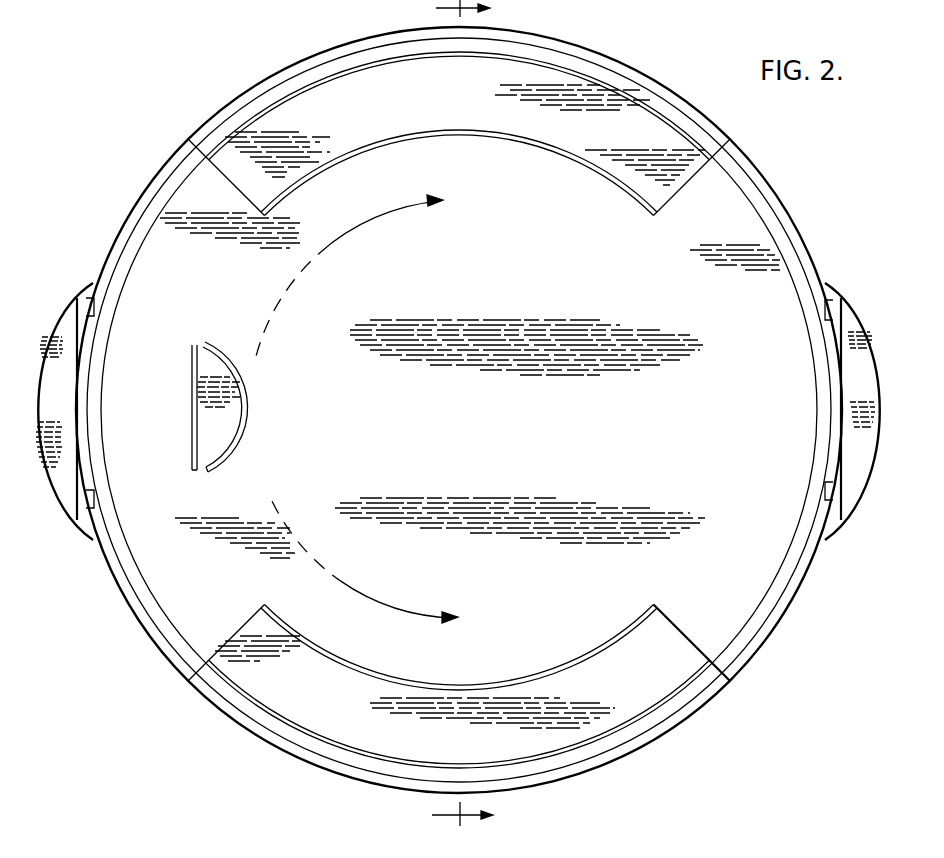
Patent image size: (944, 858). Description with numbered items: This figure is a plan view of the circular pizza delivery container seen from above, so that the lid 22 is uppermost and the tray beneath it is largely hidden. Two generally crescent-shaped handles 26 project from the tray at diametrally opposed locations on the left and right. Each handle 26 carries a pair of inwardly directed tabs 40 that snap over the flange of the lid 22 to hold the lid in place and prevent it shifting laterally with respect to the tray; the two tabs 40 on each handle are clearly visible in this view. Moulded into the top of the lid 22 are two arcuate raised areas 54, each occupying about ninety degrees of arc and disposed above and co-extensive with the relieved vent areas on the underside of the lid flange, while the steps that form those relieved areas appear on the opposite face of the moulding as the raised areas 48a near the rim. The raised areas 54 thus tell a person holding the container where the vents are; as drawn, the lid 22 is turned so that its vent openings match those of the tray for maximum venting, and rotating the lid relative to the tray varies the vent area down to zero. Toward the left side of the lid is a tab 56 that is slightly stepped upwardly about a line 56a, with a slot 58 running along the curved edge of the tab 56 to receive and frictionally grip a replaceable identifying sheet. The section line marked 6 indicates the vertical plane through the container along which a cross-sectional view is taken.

The upper container section 22 is at (733, 234).
The handles 26 is at (48, 476).
The inwardly directed tabs 40 is at (92, 318).
The raised areas 48a is at (619, 67).
The arcuate raised areas 54 is at (540, 126).
The tab 56 is at (233, 397).
The line 56a is at (195, 393).
The slot 58 is at (247, 422).
The section line 6- 6 is at (449, 422).